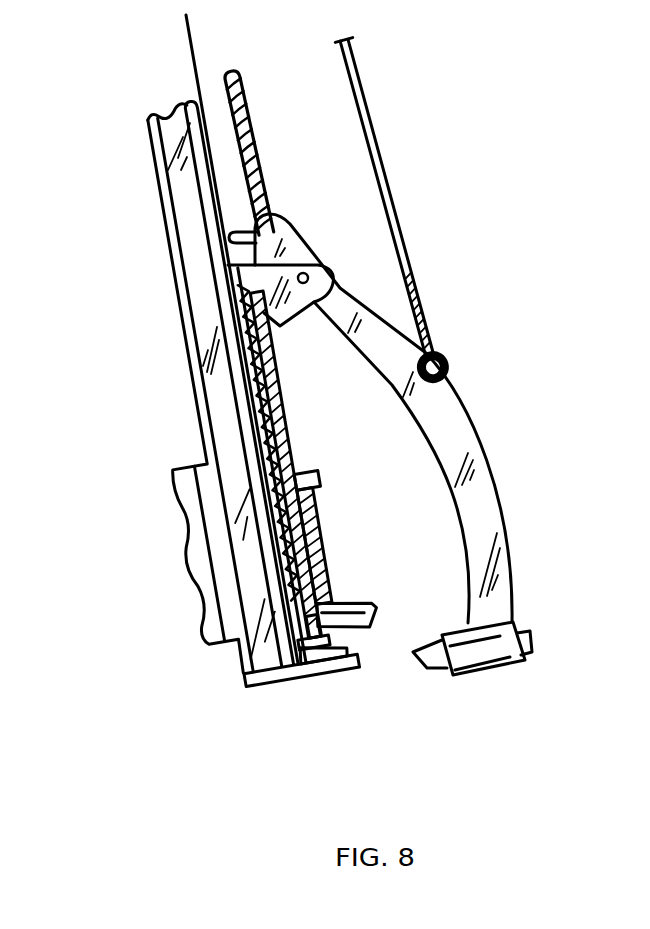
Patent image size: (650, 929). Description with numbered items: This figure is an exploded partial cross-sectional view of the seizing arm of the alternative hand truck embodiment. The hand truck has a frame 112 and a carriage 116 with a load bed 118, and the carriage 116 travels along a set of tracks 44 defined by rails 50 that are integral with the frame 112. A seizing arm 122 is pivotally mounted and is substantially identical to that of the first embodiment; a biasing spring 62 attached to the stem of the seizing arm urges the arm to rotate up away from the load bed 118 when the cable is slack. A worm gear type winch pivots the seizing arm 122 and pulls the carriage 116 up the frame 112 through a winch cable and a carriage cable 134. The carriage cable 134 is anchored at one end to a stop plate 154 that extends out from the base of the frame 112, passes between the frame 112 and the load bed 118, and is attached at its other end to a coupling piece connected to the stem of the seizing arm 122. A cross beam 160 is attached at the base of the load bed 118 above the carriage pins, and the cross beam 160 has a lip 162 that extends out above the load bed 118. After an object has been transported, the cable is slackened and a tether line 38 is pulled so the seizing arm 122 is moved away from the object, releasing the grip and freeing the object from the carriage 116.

The frame 112 is at (152, 161).
The tracks 44 is at (190, 222).
The rails 50 is at (217, 302).
The biasing spring 62 is at (253, 364).
The load bed 118 is at (274, 358).
The carriage 116 is at (293, 407).
The lip 162 is at (318, 473).
The cross beam 160 is at (328, 540).
The carriage cable 134 is at (252, 133).
The tether line 38 is at (378, 147).
The seizing arm 122 is at (488, 492).
The stop plate 154 is at (320, 680).